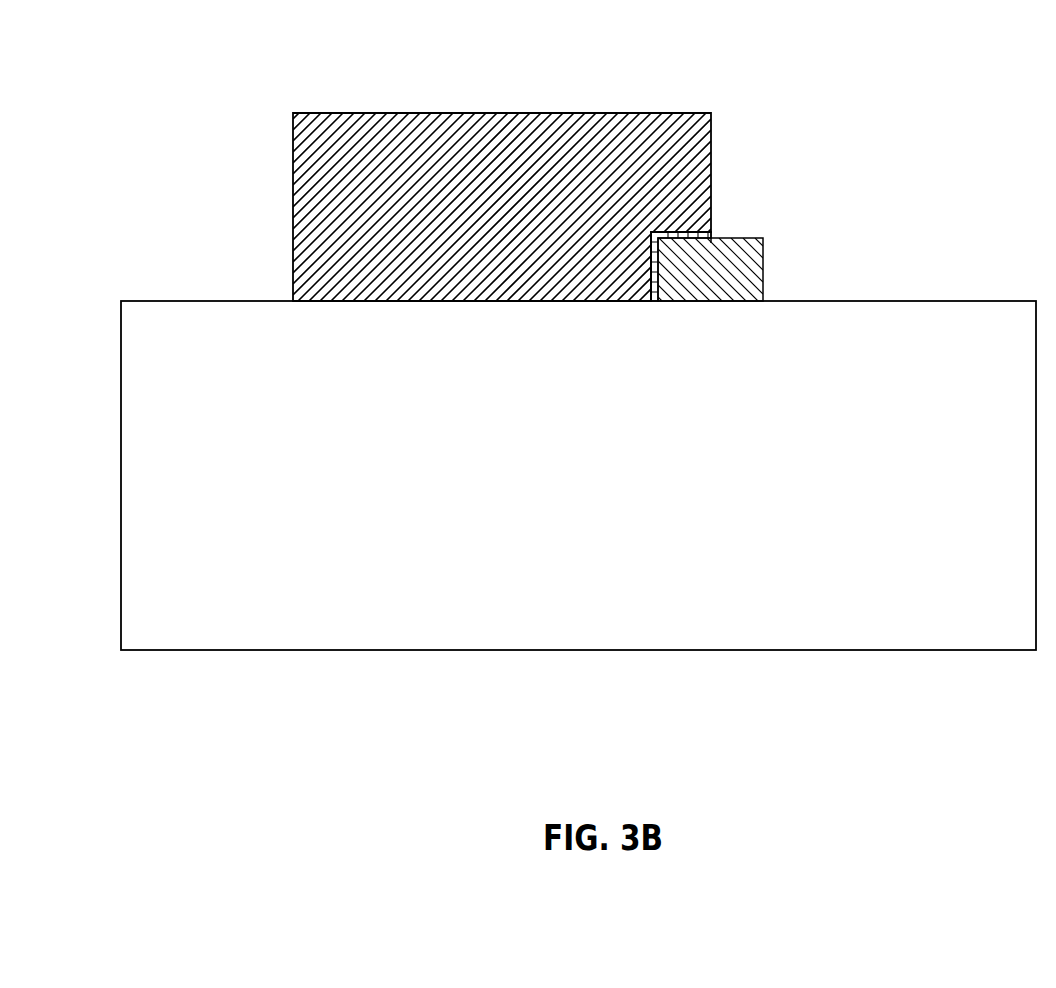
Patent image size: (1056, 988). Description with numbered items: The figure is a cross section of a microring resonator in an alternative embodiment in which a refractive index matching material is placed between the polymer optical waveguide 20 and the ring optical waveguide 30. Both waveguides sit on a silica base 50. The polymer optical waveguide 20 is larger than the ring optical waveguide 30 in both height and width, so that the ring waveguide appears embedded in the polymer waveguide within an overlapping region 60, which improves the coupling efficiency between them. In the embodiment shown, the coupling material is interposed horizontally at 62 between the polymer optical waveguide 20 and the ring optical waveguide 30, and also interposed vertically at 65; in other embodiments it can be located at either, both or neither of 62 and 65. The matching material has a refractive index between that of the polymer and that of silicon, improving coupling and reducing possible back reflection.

The polymer optical waveguide 20 is at (638, 113).
The ring optical waveguide 30 is at (765, 254).
The silica base 50 is at (918, 300).
The overlapping region 60 is at (682, 230).
The horizontal coupling material location 62 is at (713, 237).
The vertical coupling material location 65 is at (650, 259).